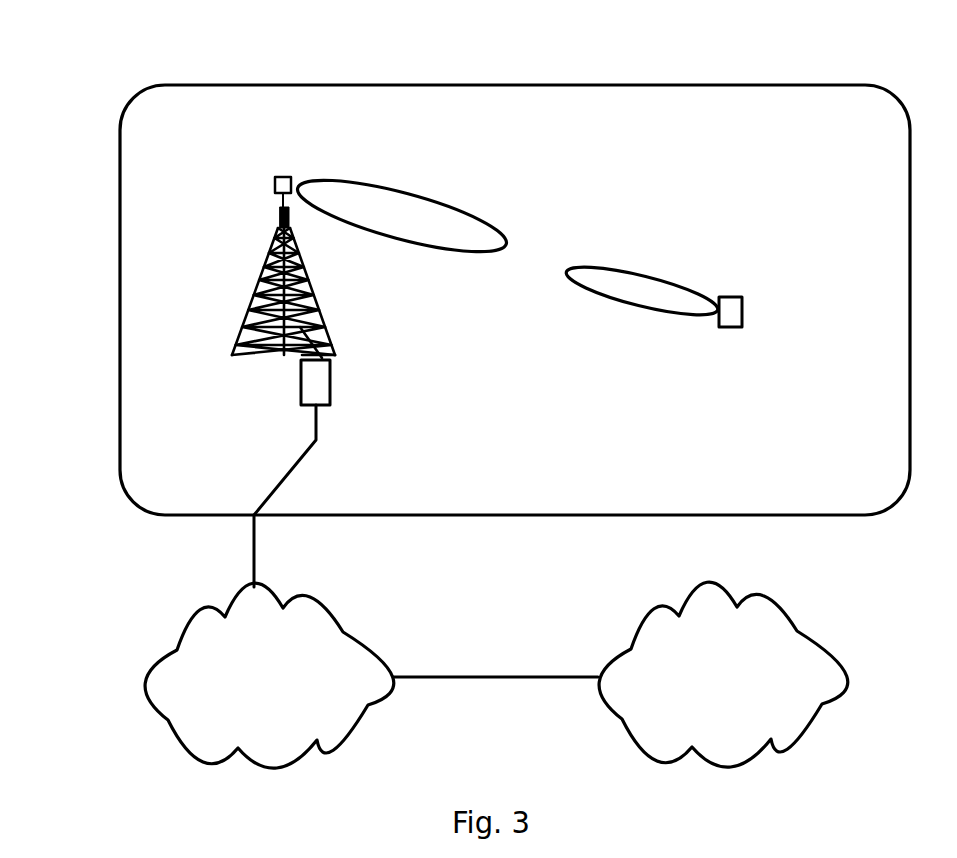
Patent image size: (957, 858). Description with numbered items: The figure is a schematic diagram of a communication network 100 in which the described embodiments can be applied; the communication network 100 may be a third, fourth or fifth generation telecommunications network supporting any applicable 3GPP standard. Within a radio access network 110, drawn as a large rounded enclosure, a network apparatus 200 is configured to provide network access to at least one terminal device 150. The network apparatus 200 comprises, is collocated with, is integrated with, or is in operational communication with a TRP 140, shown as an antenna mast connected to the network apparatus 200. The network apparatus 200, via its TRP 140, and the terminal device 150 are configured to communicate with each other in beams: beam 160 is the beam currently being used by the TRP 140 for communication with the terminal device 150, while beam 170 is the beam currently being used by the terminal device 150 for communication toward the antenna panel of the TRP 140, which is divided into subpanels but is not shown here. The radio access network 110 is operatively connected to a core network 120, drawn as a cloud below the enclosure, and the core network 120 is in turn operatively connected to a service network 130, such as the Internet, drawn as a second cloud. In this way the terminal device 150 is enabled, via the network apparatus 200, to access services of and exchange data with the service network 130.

The communication network 100 is at (213, 58).
The radio access network 110 is at (120, 338).
The core network 120 is at (283, 688).
The service network 130 is at (747, 693).
The TRP 140 is at (275, 185).
The terminal device 150 is at (742, 310).
The beam 160 is at (420, 153).
The beam 170 is at (646, 279).
The network apparatus 200 is at (310, 385).